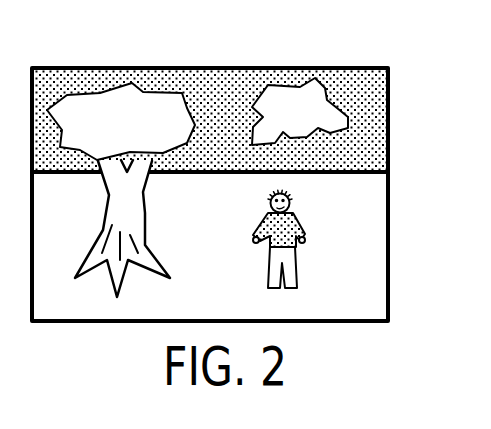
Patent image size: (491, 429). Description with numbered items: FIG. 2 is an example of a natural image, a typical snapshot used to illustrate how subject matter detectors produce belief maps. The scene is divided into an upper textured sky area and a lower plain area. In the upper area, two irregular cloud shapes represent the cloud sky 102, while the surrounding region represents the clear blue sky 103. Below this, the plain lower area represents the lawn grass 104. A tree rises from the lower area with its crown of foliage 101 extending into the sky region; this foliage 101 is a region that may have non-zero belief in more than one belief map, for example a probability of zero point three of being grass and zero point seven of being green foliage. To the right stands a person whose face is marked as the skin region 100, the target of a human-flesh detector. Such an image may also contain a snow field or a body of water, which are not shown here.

The skin region 100 is at (309, 233).
The foliage 101 is at (132, 97).
The cloud sky 102 is at (303, 90).
The clear blue sky 103 is at (375, 93).
The lawn grass 104 is at (382, 212).